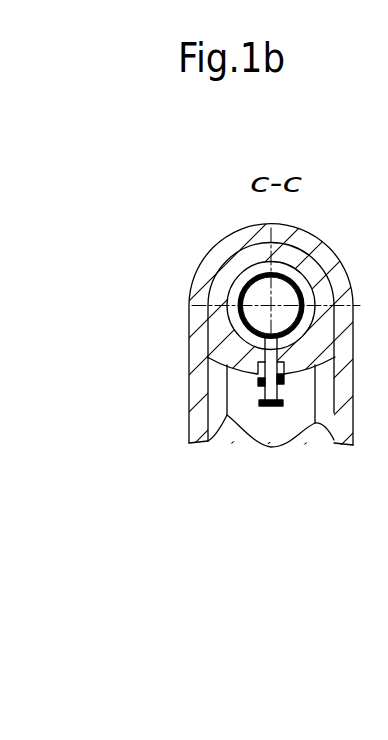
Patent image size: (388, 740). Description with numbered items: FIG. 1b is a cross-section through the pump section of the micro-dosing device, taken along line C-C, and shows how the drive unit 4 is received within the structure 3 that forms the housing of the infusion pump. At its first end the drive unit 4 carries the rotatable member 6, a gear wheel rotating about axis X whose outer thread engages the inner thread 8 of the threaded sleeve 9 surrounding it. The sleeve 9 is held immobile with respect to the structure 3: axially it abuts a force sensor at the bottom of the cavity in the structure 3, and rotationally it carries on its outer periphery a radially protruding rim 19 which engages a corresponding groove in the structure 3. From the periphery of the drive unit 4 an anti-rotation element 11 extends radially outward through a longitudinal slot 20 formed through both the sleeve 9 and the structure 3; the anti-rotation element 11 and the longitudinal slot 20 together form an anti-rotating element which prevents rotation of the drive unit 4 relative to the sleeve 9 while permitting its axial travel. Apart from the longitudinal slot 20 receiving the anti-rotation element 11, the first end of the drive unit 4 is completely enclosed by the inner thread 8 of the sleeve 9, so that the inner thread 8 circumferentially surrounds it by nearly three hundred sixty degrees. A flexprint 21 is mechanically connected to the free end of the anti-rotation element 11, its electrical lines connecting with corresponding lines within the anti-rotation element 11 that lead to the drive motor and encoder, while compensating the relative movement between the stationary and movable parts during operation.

The structure 3 is at (213, 243).
The drive unit 4 is at (263, 295).
The rotatable member 6 is at (237, 323).
The inner thread 8 is at (247, 262).
The threaded sleeve 9 is at (299, 262).
The anti-rotation element 11 is at (262, 406).
The radially protruding rim 19 is at (281, 379).
The longitudinal slot 20 is at (258, 382).
The flexprint 21 is at (275, 407).